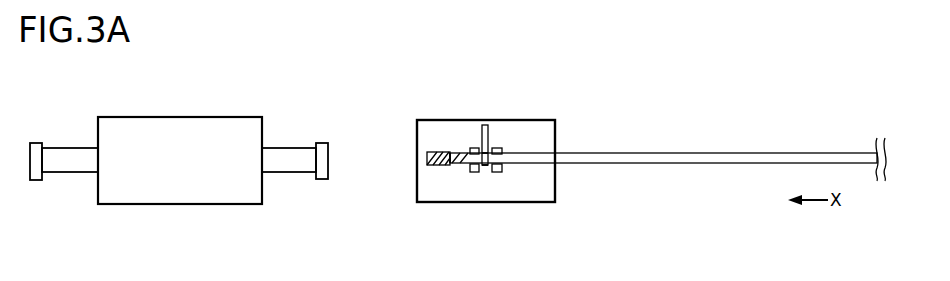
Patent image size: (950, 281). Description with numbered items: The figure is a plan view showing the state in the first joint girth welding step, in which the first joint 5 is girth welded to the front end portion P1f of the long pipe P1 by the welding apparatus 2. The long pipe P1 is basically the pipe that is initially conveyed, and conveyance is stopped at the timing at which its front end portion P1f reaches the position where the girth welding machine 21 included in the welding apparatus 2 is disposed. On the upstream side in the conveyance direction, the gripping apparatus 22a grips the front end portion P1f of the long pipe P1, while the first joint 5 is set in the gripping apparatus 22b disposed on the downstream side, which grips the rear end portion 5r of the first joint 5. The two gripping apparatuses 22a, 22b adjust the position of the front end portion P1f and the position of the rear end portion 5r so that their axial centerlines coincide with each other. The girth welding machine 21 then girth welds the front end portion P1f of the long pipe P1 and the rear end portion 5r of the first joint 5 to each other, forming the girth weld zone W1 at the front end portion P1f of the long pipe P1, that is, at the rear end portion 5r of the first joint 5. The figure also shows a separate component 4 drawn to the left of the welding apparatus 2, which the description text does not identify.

The drive unit 4 is at (186, 104).
The welding apparatus 2 is at (433, 103).
The girth welding machine 21 is at (487, 123).
The gripping apparatus 22a is at (500, 147).
The gripping apparatus 22b is at (470, 147).
The first joint 5 is at (437, 166).
The rear end portion of the first joint 5r is at (474, 173).
The girth weld zone W1 is at (490, 165).
The front end portion of the long pipe P1f is at (488, 167).
The long pipe P1 is at (722, 164).